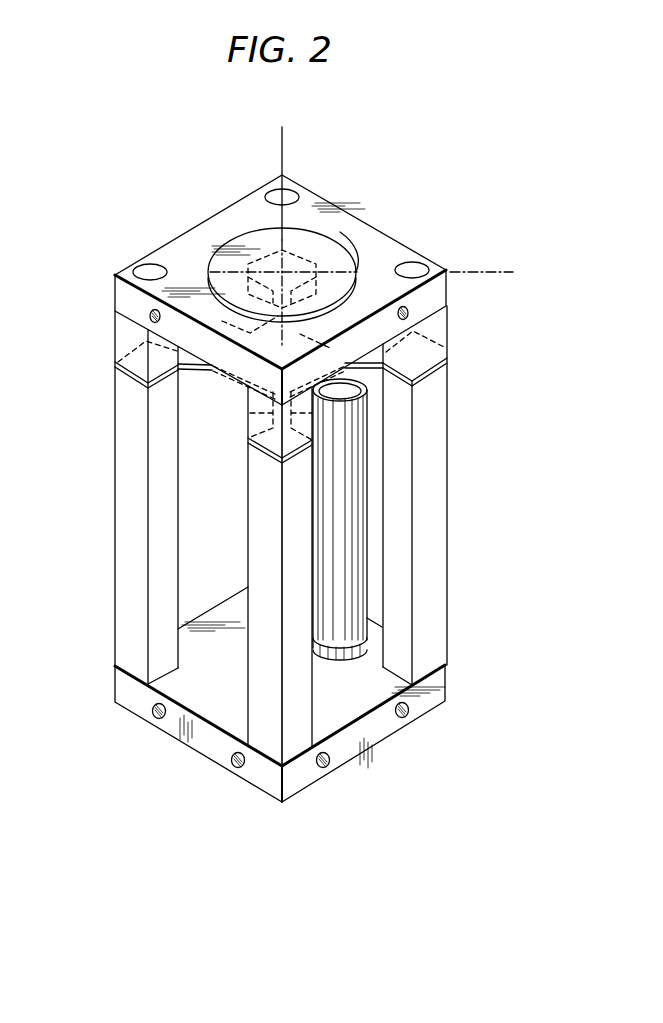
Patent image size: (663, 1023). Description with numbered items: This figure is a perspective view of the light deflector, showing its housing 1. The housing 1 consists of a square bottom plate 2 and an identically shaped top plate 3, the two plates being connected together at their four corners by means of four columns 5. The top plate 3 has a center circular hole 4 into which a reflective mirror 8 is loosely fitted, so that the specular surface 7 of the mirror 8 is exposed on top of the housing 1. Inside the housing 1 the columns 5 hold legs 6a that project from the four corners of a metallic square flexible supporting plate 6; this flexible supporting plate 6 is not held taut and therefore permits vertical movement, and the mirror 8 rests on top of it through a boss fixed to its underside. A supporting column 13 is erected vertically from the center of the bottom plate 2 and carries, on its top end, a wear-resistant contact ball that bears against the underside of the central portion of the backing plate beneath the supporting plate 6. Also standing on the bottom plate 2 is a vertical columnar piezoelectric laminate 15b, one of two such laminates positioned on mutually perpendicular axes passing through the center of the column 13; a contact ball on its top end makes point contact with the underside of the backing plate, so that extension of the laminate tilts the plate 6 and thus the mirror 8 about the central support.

The housing 1 is at (303, 452).
The bottom plate 2 is at (388, 722).
The top plate 3 is at (199, 238).
The center circular hole 4 is at (347, 260).
The columns 5 is at (118, 512).
The flexible supporting plate 6 is at (267, 326).
The legs 6a is at (453, 392).
The specular surface 7 is at (242, 243).
The reflective mirror 8 is at (342, 283).
The supporting column 13 is at (319, 600).
The piezoelectric laminate 15b is at (365, 436).